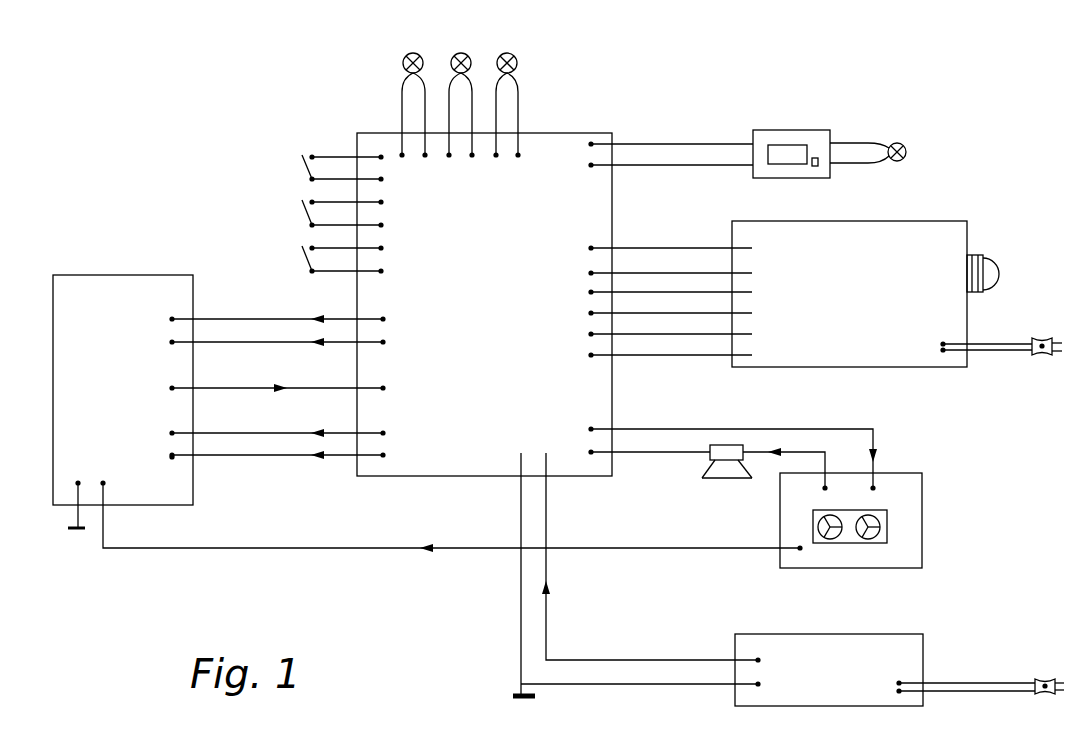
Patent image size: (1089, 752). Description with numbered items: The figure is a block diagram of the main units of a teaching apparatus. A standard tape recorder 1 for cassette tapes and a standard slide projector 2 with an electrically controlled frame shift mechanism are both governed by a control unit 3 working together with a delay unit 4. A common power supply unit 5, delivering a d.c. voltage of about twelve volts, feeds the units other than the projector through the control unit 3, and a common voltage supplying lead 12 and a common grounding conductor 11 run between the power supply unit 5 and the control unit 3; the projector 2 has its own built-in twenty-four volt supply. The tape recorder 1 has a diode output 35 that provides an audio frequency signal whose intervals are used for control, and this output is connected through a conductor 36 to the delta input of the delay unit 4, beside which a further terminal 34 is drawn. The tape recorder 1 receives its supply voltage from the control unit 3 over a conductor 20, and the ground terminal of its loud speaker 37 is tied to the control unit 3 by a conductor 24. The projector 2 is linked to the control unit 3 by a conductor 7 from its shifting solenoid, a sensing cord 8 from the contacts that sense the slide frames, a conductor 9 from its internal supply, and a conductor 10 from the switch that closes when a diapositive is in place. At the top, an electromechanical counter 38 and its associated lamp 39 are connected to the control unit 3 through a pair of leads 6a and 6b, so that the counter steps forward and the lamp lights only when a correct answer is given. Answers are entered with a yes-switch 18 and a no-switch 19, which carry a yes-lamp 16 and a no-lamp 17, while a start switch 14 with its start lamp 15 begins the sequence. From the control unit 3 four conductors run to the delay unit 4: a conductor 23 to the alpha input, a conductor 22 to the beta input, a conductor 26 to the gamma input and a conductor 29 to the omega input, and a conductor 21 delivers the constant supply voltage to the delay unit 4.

The tape recorder 1 is at (905, 505).
The projector 2 is at (933, 268).
The control unit 3 is at (495, 403).
The delay unit 4 is at (88, 313).
The power supply unit 5 is at (893, 667).
The lead 6a is at (670, 133).
The lead 6b is at (670, 177).
The conductor 7 is at (670, 284).
The sensing cord 8 is at (670, 305).
The conductor 9 is at (670, 327).
The conductor 10 is at (670, 347).
The common grounding conductor 11 is at (641, 455).
The common voltage supplying lead 12 is at (651, 456).
The start switch 14 is at (329, 260).
The start lamp 15 is at (414, 96).
The yes-lamp 16 is at (461, 96).
The no-lamp 17 is at (508, 96).
The yes-switch 18 is at (329, 168).
The no-switch 19 is at (329, 213).
The conductor 20 is at (732, 447).
The conductor 21 is at (277, 447).
The conductor 22 is at (277, 309).
The conductor 23 is at (277, 334).
The conductor 24 is at (706, 468).
The conductor 26 is at (277, 424).
The conductor 29 is at (277, 379).
The terminal 34 is at (156, 459).
The diode output 35 is at (799, 533).
The conductor 36 is at (450, 516).
The loud speaker 37 is at (723, 470).
The electro mechanical counter 38 is at (810, 141).
The lamp 39 is at (886, 145).